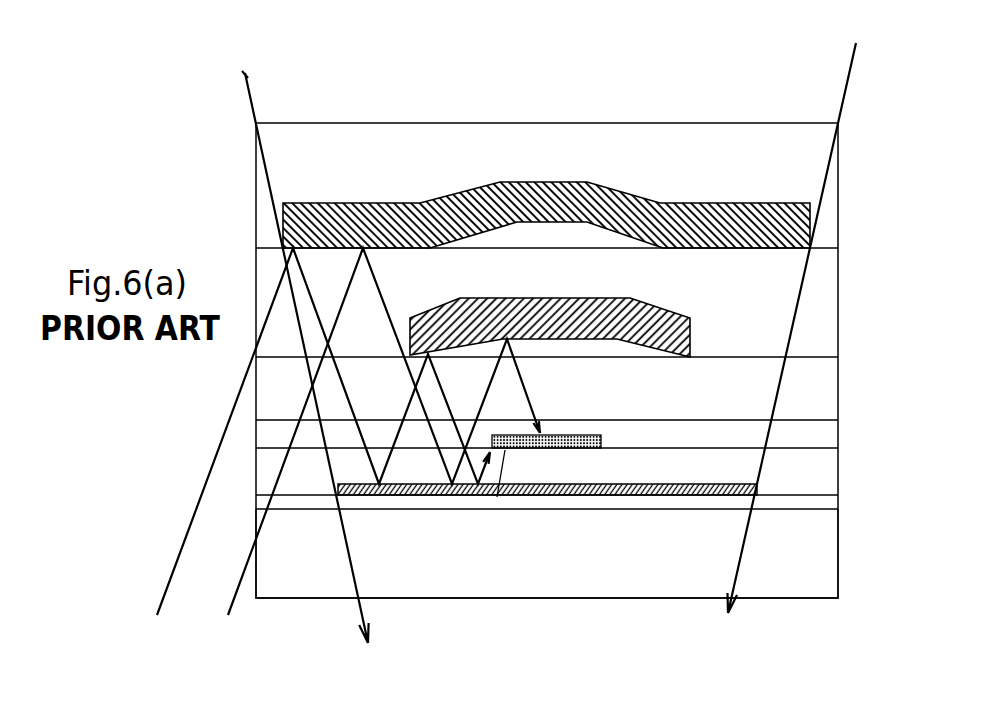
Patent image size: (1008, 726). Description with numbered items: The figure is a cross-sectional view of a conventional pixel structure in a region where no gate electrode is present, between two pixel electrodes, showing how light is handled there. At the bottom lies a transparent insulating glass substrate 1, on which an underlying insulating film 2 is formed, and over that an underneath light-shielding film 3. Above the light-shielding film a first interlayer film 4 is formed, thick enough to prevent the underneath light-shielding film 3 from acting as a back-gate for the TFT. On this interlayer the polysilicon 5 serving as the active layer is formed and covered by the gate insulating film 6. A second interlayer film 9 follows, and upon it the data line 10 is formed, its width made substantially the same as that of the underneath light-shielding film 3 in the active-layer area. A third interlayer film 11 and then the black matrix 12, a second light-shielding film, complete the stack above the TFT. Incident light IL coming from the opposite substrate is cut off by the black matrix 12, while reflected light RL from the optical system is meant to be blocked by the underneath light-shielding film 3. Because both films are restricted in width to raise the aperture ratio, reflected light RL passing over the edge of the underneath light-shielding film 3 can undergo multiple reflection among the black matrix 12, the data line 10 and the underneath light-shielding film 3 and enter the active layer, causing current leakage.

The glass substrate 1 is at (653, 590).
The underlying insulating film 2 is at (778, 508).
The underneath light-shielding film 3 is at (567, 495).
The first interlayer film 4 is at (820, 470).
The polysilicon 5 is at (497, 497).
The gate insulating film 6 is at (830, 432).
The second interlayer film 9 is at (822, 393).
The data line 10 is at (563, 297).
The third interlayer film 11 is at (813, 308).
The black matrix 12 is at (610, 189).
The incident light IL is at (248, 82).
The reflected light RL is at (293, 427).